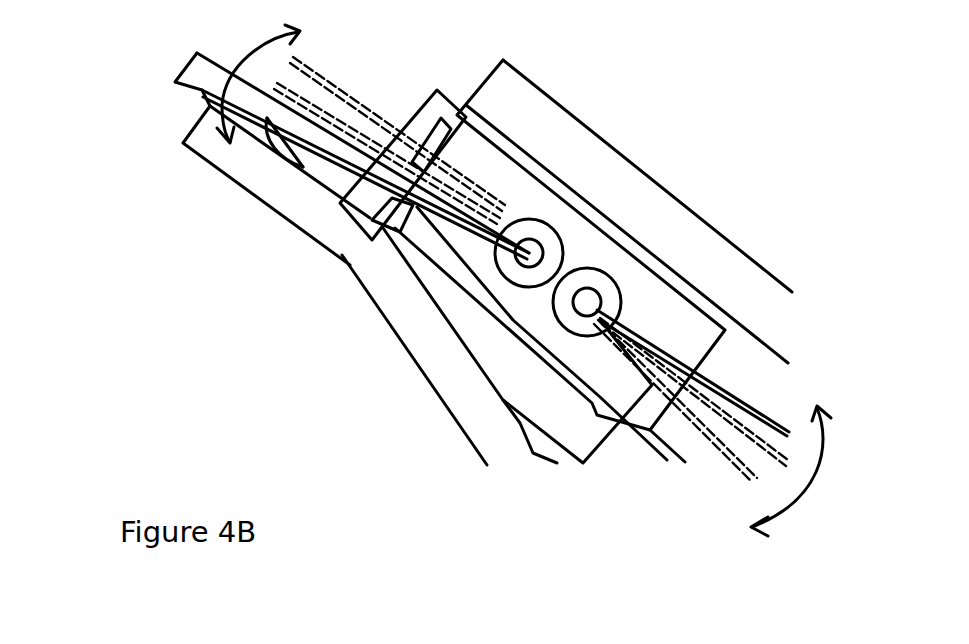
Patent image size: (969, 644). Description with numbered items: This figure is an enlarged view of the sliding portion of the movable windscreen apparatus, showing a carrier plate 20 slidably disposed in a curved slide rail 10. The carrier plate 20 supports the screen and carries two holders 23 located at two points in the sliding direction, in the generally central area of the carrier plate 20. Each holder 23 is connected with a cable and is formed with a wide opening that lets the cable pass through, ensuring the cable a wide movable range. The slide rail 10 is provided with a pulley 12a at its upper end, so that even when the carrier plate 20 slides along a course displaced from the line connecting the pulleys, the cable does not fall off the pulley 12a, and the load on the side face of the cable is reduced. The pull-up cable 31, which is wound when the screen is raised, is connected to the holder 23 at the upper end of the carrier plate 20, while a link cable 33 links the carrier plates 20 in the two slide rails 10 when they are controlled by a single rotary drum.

The slide rail 10 is at (655, 212).
The pulley 12a is at (202, 90).
The carrier plate 20 is at (530, 188).
The holder 23 is at (551, 228).
The pull-up cable 31 is at (353, 200).
The link cable 33 is at (737, 448).